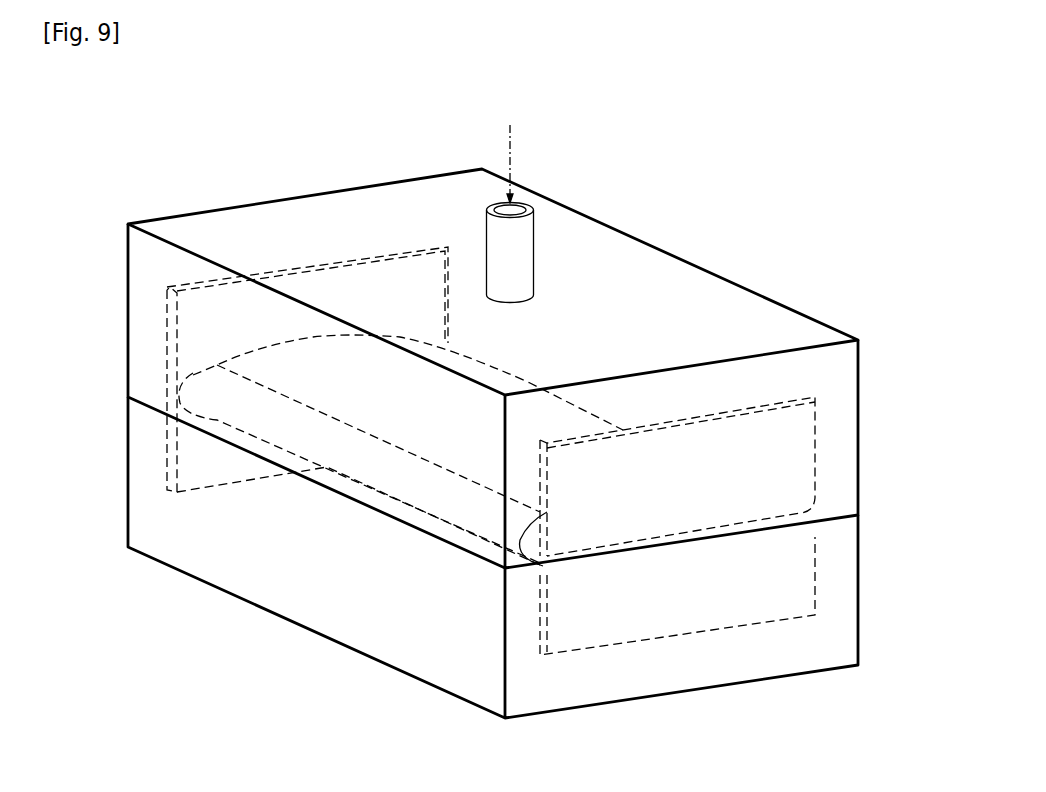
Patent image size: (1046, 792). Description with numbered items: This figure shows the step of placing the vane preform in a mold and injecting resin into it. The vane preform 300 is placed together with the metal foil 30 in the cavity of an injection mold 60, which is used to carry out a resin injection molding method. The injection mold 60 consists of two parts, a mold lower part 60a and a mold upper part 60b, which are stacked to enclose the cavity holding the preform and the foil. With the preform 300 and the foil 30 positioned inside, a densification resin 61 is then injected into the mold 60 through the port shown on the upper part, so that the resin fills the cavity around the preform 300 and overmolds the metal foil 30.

The injection mold 60 is at (545, 443).
The mold lower part 60a is at (835, 640).
The mold upper part 60b is at (843, 481).
The densification resin 61 is at (510, 156).
The metal foil 30 is at (193, 373).
The vane preform 300 is at (275, 362).